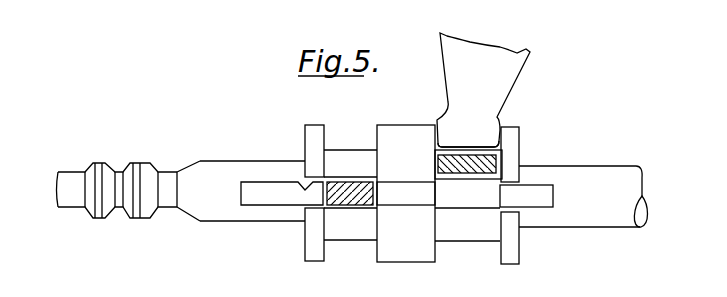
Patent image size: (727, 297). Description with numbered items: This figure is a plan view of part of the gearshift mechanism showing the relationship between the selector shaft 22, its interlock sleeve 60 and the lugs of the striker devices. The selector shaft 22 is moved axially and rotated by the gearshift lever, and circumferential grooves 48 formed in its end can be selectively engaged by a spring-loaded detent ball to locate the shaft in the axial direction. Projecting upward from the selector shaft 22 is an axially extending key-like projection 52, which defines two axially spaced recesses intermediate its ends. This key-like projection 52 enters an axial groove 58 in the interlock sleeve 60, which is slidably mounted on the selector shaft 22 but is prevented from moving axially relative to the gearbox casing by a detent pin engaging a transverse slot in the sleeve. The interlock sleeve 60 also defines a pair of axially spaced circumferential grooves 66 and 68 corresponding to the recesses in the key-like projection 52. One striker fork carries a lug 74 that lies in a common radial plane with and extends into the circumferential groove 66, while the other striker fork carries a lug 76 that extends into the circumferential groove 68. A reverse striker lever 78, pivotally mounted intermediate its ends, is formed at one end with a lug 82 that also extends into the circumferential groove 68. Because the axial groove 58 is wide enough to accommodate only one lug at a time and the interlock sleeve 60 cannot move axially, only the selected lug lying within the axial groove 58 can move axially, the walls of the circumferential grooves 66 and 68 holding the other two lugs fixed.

The selector shaft 22 is at (612, 213).
The circumferential grooves 48 is at (165, 172).
The axially extending key-like projection 52 is at (537, 200).
The axial groove 58 is at (303, 189).
The interlock sleeve 60 is at (313, 245).
The circumferential groove 66 is at (347, 258).
The circumferential groove 68 is at (468, 255).
The lug 74 is at (353, 188).
The lug 76 is at (485, 162).
The reverse striker lever 78 is at (515, 58).
The lug 82 is at (478, 130).